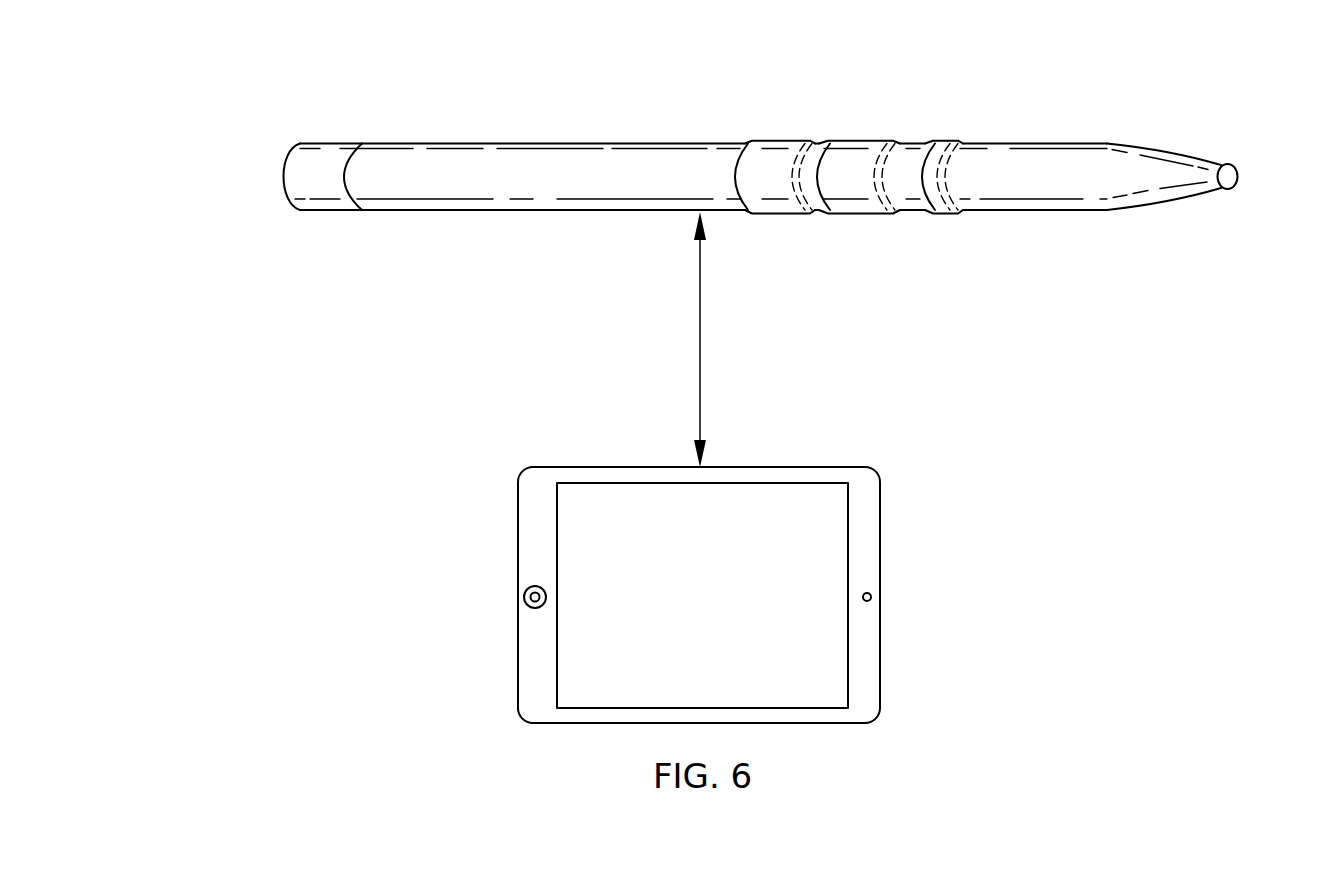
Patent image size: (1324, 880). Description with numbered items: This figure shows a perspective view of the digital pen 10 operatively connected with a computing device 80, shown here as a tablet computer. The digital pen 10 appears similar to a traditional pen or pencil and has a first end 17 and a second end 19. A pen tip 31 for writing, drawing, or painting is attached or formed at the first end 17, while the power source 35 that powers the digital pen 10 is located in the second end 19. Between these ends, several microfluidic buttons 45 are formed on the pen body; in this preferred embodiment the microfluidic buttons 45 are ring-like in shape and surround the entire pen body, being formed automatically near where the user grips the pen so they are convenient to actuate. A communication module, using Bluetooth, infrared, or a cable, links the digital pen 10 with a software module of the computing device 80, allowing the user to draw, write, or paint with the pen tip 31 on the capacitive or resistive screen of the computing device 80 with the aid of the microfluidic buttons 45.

The digital pen 10 is at (484, 88).
The second end 19 is at (265, 166).
The power source 35 is at (320, 142).
The microfluidic buttons 45 is at (944, 141).
The first end 17 is at (1208, 138).
The pen tip 31 is at (1238, 174).
The computing device 80 is at (492, 505).